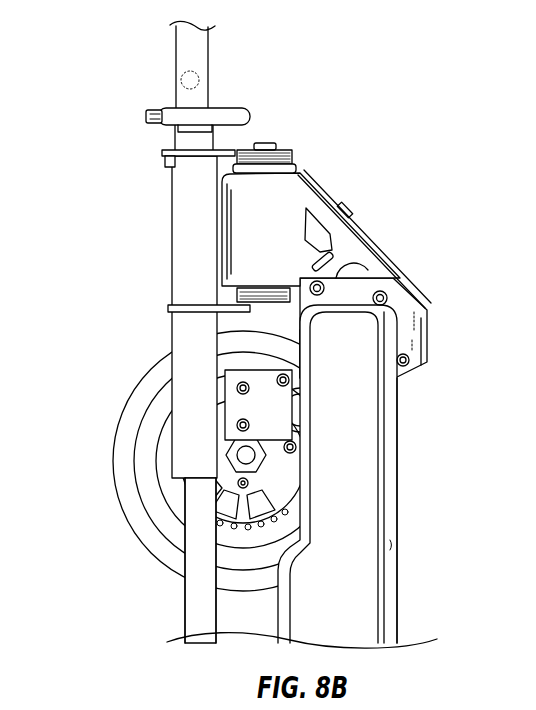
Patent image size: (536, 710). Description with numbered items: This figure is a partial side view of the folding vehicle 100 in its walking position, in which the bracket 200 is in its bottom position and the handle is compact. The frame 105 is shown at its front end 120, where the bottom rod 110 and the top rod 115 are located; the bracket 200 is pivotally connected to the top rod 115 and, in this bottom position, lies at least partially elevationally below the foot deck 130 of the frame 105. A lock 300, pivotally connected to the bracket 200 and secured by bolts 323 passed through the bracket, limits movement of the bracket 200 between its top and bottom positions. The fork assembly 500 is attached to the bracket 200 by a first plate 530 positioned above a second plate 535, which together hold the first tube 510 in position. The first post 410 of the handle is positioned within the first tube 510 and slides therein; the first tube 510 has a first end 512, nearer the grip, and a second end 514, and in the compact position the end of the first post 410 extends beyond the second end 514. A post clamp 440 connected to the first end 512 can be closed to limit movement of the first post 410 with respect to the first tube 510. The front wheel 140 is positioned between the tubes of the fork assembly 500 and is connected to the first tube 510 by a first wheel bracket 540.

The folding vehicle 100 is at (390, 86).
The frame 105 is at (363, 514).
The bottom rod 110 is at (324, 285).
The top rod 115 is at (386, 295).
The front end 120 is at (360, 318).
The foot deck 130 is at (398, 538).
The front wheel 140 is at (120, 465).
The bracket 200 is at (304, 203).
The lock 300 is at (360, 228).
The bolts 323 is at (409, 358).
The first post 410 is at (180, 68).
The post clamp 440 is at (220, 110).
The fork assembly 500 is at (252, 147).
The first tube 510 is at (186, 268).
The first end 512 is at (190, 127).
The second end 514 is at (185, 508).
The first plate 530 is at (167, 156).
The second plate 535 is at (180, 307).
The first wheel bracket 540 is at (246, 410).